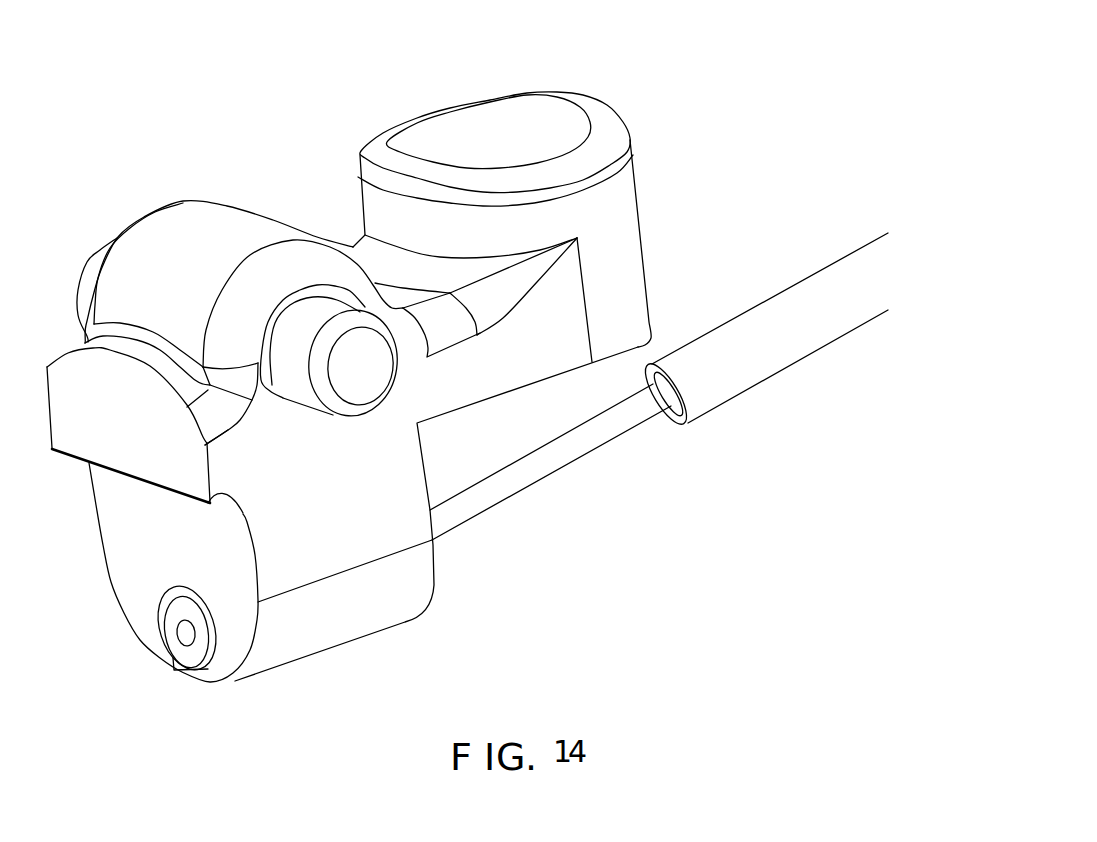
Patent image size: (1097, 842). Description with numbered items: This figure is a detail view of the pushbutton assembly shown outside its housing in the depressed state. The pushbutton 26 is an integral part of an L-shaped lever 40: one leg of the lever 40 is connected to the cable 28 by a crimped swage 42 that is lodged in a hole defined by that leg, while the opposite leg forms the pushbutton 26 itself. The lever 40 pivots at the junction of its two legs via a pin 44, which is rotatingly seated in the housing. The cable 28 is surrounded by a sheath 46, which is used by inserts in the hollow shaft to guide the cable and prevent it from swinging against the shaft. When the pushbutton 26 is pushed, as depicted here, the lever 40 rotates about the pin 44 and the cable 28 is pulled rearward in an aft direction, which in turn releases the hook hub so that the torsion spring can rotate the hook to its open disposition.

The pushbutton 26 is at (490, 117).
The cable 28 is at (587, 452).
The L-shaped lever 40 is at (365, 475).
The crimped swage 42 is at (176, 613).
The pin 44 is at (328, 312).
The sheath 46 is at (786, 290).